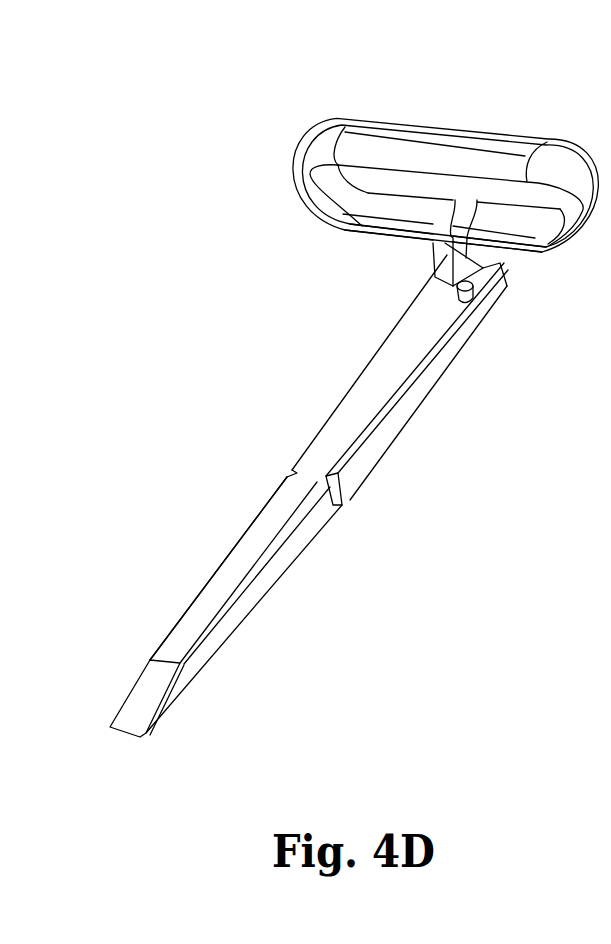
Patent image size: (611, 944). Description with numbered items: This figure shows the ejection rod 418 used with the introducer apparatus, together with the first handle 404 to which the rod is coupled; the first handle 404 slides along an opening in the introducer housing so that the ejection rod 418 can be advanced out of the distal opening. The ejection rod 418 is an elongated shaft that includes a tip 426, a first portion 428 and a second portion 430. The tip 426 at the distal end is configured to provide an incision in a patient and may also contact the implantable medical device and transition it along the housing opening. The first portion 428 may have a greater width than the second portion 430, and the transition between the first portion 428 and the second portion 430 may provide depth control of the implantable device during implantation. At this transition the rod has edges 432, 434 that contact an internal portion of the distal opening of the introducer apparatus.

The first handle 404 is at (418, 124).
The ejection rod 418 is at (262, 597).
The tip 426 is at (124, 737).
The first portion 428 is at (221, 566).
The second portion 430 is at (346, 397).
The edge 432 is at (290, 475).
The edge 434 is at (342, 505).